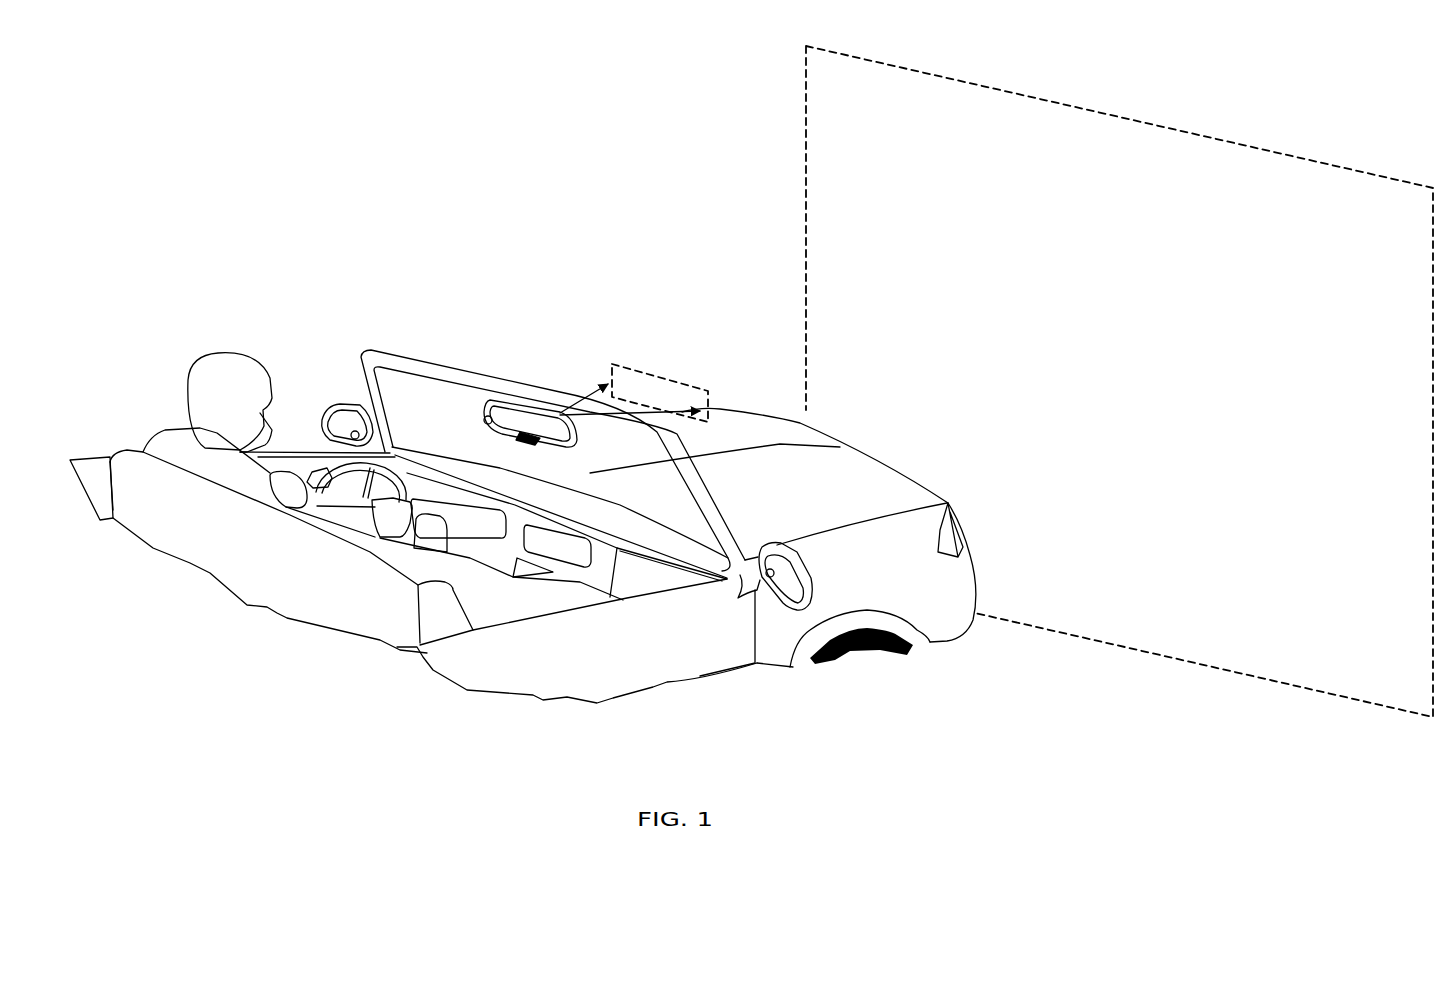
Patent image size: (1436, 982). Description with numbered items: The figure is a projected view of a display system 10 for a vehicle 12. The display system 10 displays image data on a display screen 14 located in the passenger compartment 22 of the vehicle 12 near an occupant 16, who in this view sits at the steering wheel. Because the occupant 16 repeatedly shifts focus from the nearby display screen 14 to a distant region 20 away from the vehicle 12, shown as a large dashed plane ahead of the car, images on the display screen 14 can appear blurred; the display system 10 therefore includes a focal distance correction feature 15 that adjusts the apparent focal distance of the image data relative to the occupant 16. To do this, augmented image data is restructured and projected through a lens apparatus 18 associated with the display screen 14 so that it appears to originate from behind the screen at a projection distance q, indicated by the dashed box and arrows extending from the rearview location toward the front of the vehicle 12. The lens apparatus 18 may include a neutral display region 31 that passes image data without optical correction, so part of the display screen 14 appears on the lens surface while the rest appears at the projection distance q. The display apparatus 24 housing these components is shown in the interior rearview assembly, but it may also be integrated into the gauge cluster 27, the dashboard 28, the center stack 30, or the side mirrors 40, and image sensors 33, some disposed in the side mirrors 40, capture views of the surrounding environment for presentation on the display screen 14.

The display system 10 is at (441, 232).
The vehicle 12 is at (672, 264).
The display screen 14 is at (562, 430).
The focal distance correction feature 15 is at (482, 392).
The occupant 16 is at (198, 395).
The lens apparatus 18 is at (522, 405).
The distant region 20 is at (804, 92).
The passenger compartment 22 is at (393, 396).
The display apparatus 24 is at (549, 405).
The gauge cluster 27 is at (412, 492).
The dashboard 28 is at (540, 497).
The center stack 30 is at (517, 543).
The neutral display region 31 is at (503, 400).
The image sensors 33 is at (780, 603).
The side mirrors 40 is at (355, 432).
The projection distance q is at (660, 413).